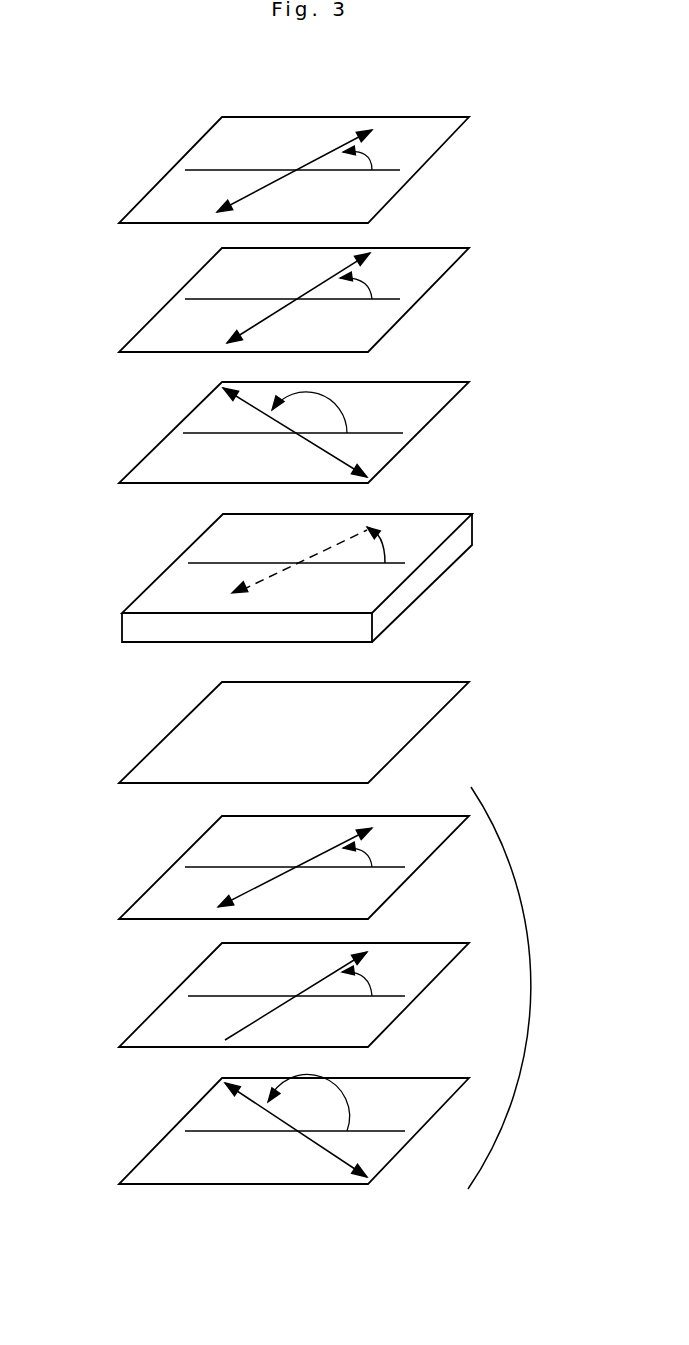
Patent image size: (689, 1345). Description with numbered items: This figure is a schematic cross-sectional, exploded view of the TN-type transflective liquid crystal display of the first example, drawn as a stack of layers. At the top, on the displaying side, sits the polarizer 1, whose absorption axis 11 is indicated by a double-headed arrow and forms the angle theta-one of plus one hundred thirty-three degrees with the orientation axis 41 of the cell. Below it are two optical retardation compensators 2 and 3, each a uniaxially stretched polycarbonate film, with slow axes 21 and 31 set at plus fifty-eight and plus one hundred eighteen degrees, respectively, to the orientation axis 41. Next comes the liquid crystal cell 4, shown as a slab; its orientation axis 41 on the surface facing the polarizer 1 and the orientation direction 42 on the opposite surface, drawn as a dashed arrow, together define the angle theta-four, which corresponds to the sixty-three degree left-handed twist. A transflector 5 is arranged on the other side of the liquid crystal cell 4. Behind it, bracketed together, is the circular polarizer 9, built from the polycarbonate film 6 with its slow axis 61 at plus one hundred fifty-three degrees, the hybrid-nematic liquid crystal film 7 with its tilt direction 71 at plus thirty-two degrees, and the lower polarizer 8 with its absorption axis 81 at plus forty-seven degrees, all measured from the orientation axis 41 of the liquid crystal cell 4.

The polarizer 1 is at (173, 192).
The optical retardation compensator 2 is at (173, 322).
The optical retardation compensator 3 is at (173, 457).
The liquid crystal cell 4 is at (175, 585).
The transflector 5 is at (180, 757).
The polycarbonate film 6 is at (173, 887).
The liquid crystal film 7 is at (175, 1018).
The lower polarizer 8 is at (173, 1157).
The circular polarizer 9 is at (517, 977).
The absorption axis 11 is at (363, 128).
The slow axis 21 is at (371, 253).
The slow axis 31 is at (367, 477).
The orientation axis 41 is at (207, 567).
The orientation direction 42 is at (232, 593).
The slow axis 61 is at (364, 832).
The tilt direction 71 is at (367, 952).
The absorption axis 81 is at (367, 1177).